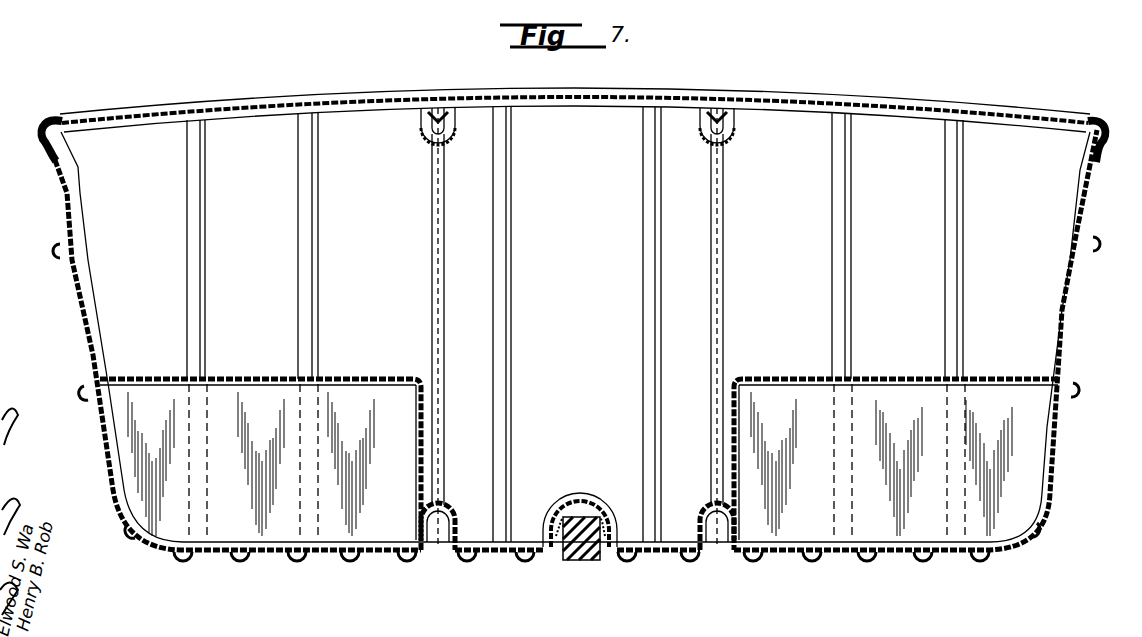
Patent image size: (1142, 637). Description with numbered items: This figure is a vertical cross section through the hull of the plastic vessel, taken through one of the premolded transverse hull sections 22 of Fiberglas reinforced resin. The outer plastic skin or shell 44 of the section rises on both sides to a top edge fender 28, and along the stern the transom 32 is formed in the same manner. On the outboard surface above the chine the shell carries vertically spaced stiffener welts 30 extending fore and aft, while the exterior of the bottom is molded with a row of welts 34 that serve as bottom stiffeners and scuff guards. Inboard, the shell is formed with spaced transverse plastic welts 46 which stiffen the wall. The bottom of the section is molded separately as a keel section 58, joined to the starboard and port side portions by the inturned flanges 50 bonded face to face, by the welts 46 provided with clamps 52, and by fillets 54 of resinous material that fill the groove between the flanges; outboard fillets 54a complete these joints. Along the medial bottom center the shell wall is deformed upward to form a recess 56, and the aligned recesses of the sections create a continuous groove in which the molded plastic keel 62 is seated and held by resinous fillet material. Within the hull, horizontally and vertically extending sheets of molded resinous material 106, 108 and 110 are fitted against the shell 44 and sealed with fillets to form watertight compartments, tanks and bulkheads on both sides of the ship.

The transverse hull section 22 is at (1082, 330).
The top edge fender 28 is at (1093, 140).
The transom 32 is at (1093, 116).
The plastic skin or shell 44 is at (1090, 190).
The transverse plastic welts 46 is at (1050, 440).
The outboard stiffener welts 30 is at (60, 251).
The bottom welts 34 is at (297, 560).
The clamps 52 is at (430, 235).
The flanges 50 is at (448, 130).
The fillet 54 is at (440, 108).
The outboard fillets 54a is at (440, 556).
The keel section 58 is at (585, 493).
The recess 56 is at (608, 516).
The molded plastic keel 62 is at (583, 561).
The sheet of molded resinous material 108 is at (352, 377).
The sheet of molded resinous material 110 is at (424, 420).
The sheet of molded resinous material 106 is at (407, 400).